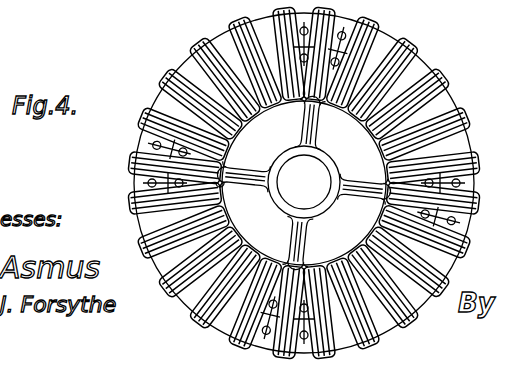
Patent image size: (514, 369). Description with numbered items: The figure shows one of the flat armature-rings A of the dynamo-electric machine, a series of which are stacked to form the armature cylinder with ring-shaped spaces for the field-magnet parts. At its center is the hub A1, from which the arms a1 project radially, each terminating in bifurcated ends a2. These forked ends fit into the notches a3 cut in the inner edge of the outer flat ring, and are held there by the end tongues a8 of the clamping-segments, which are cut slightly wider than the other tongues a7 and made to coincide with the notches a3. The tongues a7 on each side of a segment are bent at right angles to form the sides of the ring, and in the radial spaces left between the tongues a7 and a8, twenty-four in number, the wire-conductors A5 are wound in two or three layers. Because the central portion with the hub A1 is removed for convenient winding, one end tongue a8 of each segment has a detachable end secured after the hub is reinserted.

The armature-ring A is at (412, 64).
The hub A1 is at (326, 166).
The wire-conductors A5 is at (197, 43).
The arms a1 is at (318, 120).
The bifurcated ends a2 is at (302, 106).
The notches a3 is at (221, 187).
The tongues a7 is at (236, 22).
The end tongues a8 is at (250, 343).